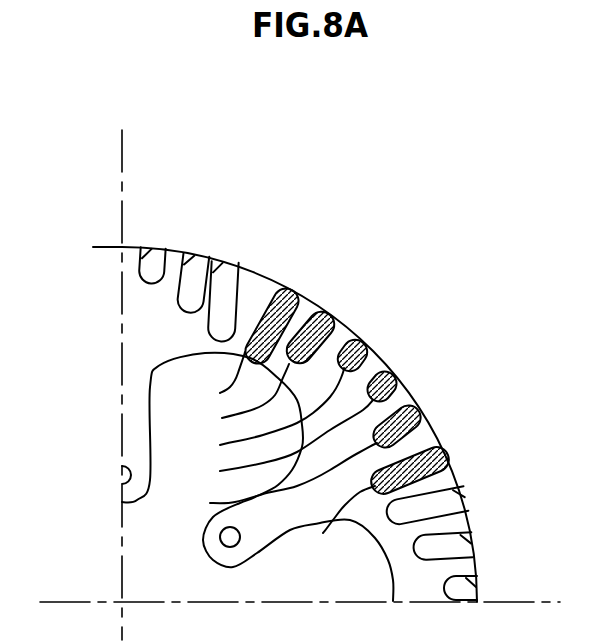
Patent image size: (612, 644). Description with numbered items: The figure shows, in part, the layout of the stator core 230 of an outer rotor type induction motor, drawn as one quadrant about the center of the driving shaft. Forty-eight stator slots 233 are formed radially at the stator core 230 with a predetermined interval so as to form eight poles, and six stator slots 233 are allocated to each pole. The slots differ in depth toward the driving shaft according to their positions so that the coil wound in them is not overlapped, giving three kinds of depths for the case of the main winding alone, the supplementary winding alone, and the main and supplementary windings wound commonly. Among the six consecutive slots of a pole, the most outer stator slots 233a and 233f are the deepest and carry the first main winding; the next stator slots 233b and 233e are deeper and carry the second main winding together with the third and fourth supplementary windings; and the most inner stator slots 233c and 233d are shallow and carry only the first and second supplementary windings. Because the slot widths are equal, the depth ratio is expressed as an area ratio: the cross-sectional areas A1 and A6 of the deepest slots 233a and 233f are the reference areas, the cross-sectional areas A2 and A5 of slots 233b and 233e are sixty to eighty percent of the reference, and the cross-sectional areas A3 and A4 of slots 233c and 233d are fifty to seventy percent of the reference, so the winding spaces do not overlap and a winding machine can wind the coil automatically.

The stator core 230 is at (110, 273).
The stator slots 233 is at (152, 260).
The cross-sectional area A1 is at (272, 290).
The cross-sectional area A2 is at (313, 318).
The cross-sectional area A3 is at (367, 340).
The cross-sectional area A4 is at (393, 376).
The cross-sectional area A5 is at (426, 411).
The cross-sectional area A6 is at (440, 453).
The most outer stator slot 233a is at (203, 380).
The stator slot 233b is at (225, 399).
The most inner stator slot 233c is at (253, 413).
The most inner stator slot 233d is at (267, 442).
The stator slot 233e is at (264, 480).
The most outer stator slot 233f is at (332, 529).